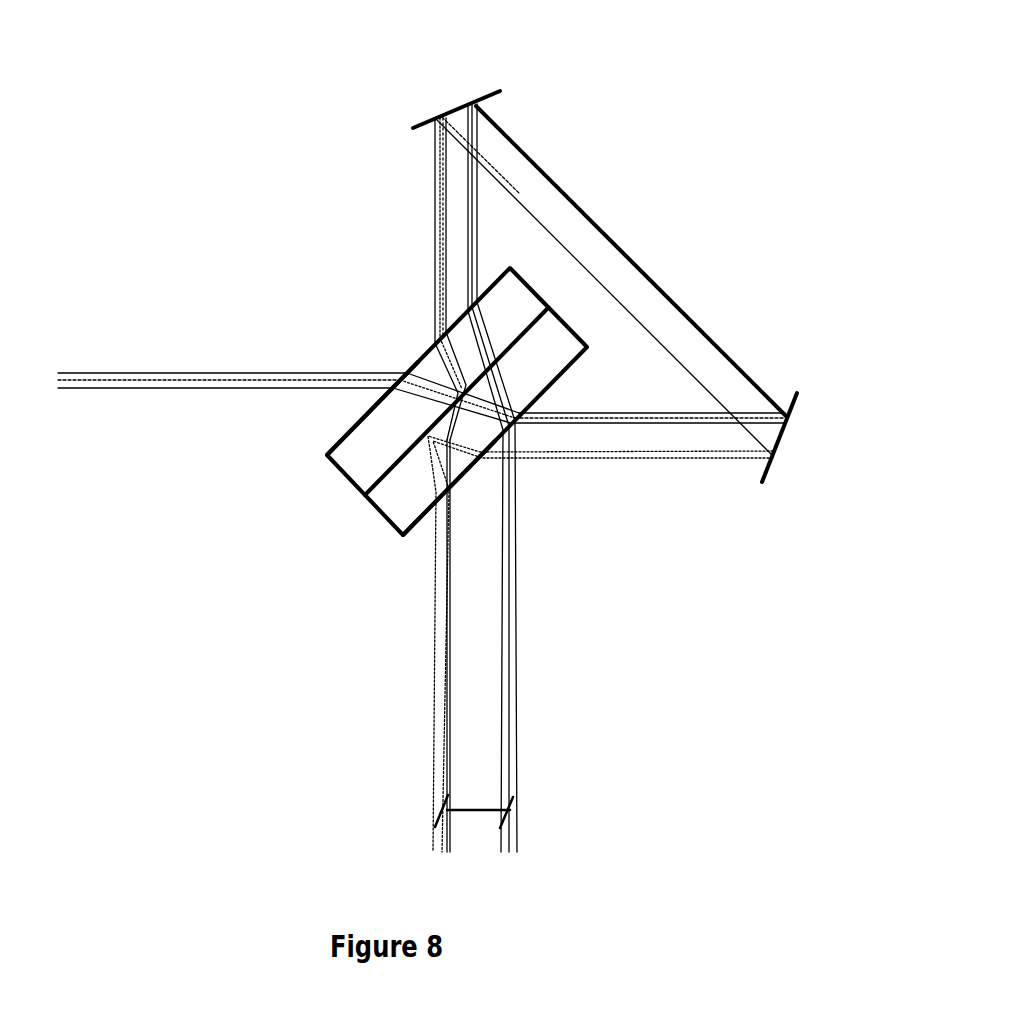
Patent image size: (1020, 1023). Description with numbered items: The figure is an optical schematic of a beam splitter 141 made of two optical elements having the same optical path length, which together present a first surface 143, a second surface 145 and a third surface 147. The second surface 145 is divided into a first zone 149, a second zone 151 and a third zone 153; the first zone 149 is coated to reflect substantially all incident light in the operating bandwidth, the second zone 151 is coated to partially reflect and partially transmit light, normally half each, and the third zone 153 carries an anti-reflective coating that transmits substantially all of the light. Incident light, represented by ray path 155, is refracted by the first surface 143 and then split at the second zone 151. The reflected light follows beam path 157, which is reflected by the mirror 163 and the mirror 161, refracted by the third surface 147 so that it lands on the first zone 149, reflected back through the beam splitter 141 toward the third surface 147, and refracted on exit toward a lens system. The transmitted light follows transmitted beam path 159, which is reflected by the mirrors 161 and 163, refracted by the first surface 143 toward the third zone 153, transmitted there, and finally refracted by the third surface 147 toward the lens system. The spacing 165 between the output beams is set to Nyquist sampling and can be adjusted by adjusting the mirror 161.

The beam splitter 141 is at (547, 273).
The first surface 143 is at (357, 412).
The second surface 145 is at (387, 457).
The third surface 147 is at (417, 507).
The first zone 149 is at (400, 440).
The second zone 151 is at (447, 387).
The third zone 153 is at (500, 332).
The ray path 155 is at (150, 365).
The beam path 157 is at (427, 177).
The transmitted beam path 159 is at (682, 291).
The mirror 161 is at (787, 448).
The mirror 163 is at (447, 104).
The spacing 165 is at (478, 810).